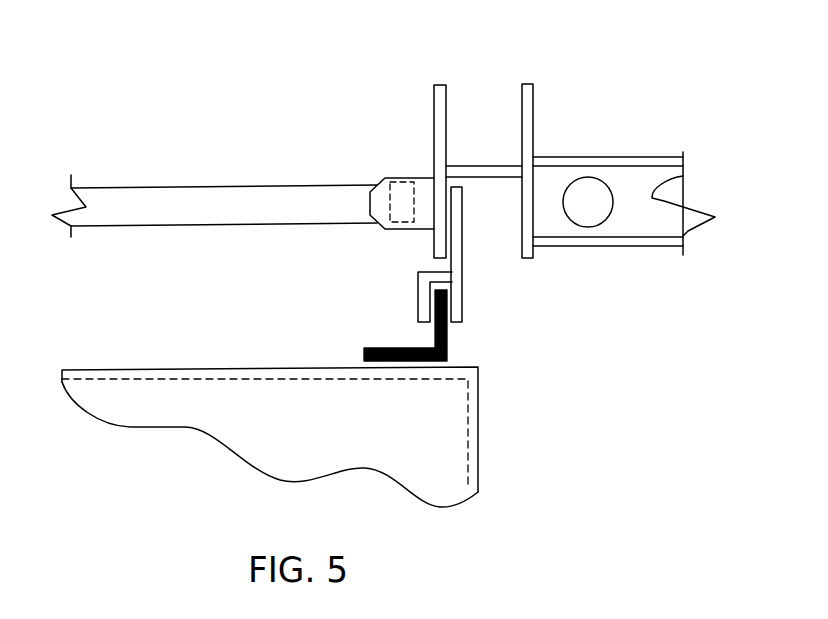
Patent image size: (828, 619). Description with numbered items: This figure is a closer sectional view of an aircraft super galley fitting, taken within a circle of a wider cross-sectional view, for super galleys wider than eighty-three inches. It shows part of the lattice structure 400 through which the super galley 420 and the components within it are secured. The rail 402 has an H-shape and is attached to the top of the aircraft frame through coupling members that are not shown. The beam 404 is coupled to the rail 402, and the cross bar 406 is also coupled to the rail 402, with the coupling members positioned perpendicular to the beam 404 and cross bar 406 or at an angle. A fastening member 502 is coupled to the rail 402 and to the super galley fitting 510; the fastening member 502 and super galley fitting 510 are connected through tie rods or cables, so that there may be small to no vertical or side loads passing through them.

The lattice structure 400 is at (390, 76).
The rail 402 is at (534, 138).
The beam 404 is at (104, 185).
The cross bar 406 is at (656, 155).
The super galley 420 is at (479, 440).
The fastening member 502 is at (450, 266).
The super galley fitting 510 is at (448, 353).